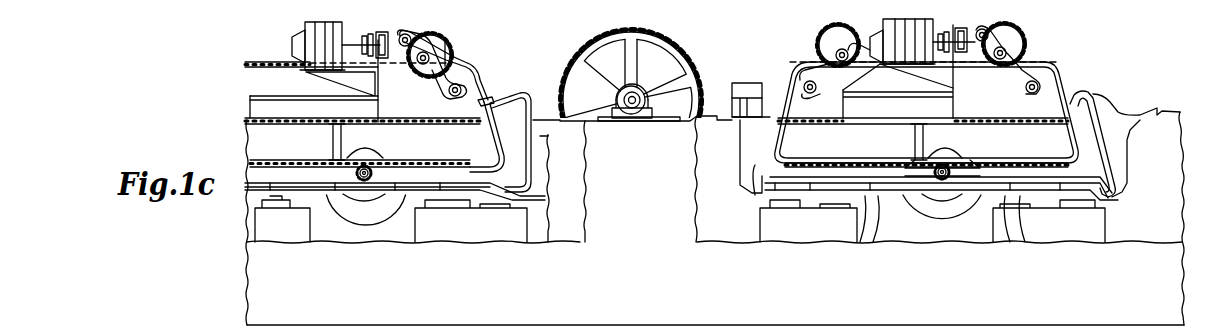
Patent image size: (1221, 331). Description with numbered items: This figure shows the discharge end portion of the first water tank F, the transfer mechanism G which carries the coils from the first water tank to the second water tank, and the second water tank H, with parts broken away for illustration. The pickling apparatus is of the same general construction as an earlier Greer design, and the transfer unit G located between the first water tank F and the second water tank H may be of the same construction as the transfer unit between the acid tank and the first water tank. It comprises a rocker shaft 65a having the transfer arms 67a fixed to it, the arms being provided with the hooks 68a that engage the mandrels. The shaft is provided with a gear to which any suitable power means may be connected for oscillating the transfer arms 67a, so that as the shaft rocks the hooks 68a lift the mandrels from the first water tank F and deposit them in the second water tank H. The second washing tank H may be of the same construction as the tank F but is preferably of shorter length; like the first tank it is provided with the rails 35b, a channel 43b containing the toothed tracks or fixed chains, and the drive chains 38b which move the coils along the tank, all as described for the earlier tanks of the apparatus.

The transfer mechanism G is at (568, 58).
The transfer arms 67a is at (554, 120).
The rocker shaft 65a is at (632, 108).
The hooks 68a is at (566, 181).
The first water tank F is at (413, 260).
The drive chains 38b is at (995, 160).
The rails 35b is at (875, 197).
The second water tank H is at (939, 259).
The channel 43b is at (913, 178).